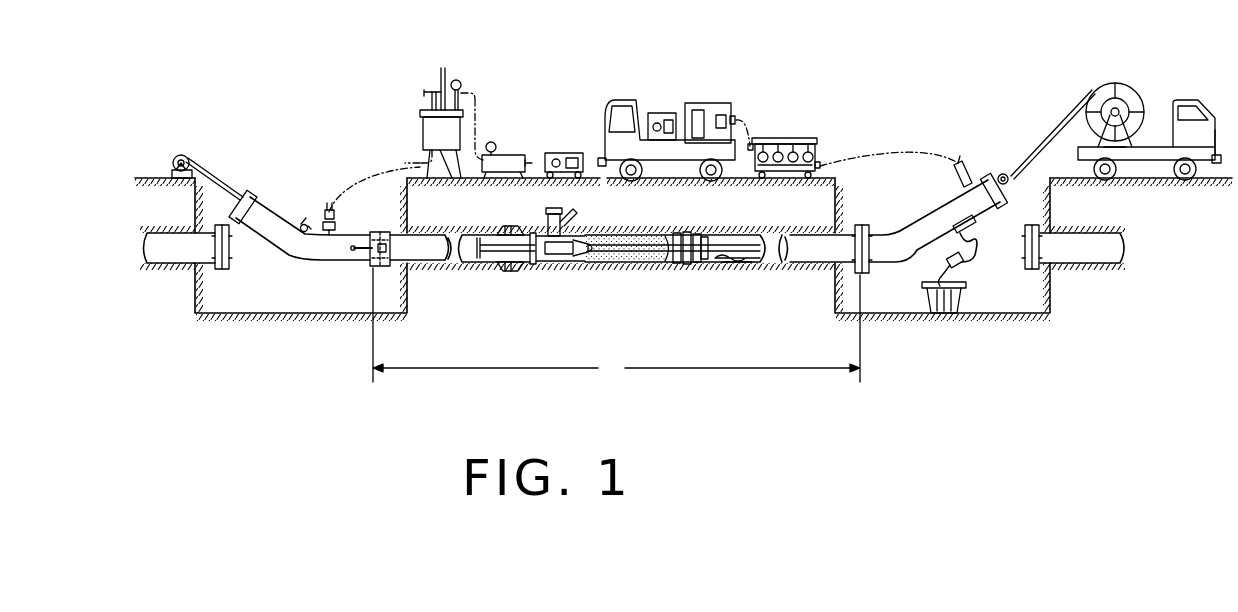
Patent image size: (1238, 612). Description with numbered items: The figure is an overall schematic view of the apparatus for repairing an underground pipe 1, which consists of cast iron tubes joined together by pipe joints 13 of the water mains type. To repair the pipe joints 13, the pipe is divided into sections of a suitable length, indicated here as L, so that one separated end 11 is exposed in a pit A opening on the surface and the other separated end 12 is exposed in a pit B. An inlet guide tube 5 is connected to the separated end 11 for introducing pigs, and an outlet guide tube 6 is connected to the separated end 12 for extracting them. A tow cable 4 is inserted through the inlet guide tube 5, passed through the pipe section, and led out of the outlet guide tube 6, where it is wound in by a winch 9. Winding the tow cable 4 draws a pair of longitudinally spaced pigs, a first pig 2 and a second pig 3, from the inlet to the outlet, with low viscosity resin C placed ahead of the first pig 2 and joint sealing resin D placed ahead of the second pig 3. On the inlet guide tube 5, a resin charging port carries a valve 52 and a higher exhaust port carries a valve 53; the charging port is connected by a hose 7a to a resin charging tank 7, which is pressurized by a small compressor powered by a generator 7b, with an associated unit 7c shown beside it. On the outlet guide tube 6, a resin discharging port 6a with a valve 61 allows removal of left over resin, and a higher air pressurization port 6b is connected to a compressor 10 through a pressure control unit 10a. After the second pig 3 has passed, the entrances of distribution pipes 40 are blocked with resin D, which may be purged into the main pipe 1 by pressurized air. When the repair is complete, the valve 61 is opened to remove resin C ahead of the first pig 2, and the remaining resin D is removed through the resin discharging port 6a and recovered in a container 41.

The underground pipe 1 is at (172, 240).
The first pig 2 is at (681, 236).
The second pig 3 is at (549, 264).
The tow cable 4 is at (226, 186).
The inlet guide tube 5 is at (280, 236).
The outlet guide tube 6 is at (938, 212).
The resin discharging port 6a is at (975, 234).
The air pressurization port 6b is at (980, 163).
The resin charging tank 7 is at (423, 127).
The hose 7a is at (368, 163).
The generator 7b is at (565, 153).
The pump 7c is at (512, 153).
The winch 9 is at (1130, 90).
The compressor 10 is at (722, 93).
The pressure control unit 10a is at (795, 138).
The separated end 11 is at (392, 266).
The separated end 12 is at (850, 262).
The pipe joints 13 is at (505, 228).
The distribution pipes 40 is at (578, 211).
The container 41 is at (964, 298).
The valve 52 is at (336, 226).
The valve 53 is at (306, 222).
The valve 61 is at (965, 265).
The pit A is at (338, 303).
The pit B is at (900, 303).
The low viscosity resin C is at (726, 264).
The joint sealing resin D is at (611, 264).
The lining length L is at (616, 325).